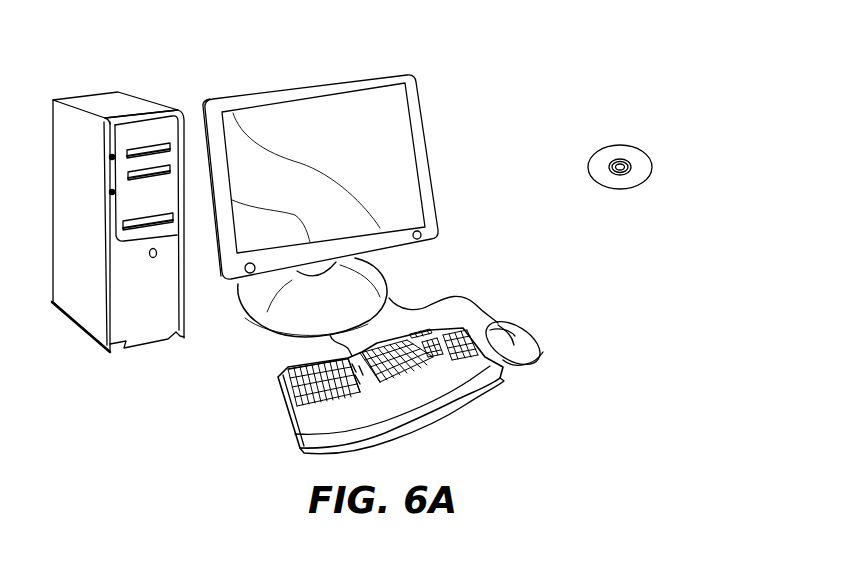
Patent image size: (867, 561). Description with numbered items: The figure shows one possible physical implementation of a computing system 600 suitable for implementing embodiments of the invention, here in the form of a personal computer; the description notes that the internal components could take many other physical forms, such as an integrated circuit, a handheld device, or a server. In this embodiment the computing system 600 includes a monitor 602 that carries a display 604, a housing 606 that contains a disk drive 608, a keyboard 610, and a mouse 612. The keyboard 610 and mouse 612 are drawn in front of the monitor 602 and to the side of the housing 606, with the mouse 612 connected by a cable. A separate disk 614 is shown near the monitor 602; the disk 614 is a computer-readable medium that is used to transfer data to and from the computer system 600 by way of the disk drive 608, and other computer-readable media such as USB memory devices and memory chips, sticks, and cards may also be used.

The computing system 600 is at (543, 58).
The monitor 602 is at (432, 173).
The display 604 is at (385, 113).
The housing 606 is at (105, 99).
The disk drive 608 is at (167, 222).
The keyboard 610 is at (290, 415).
The mouse 612 is at (537, 337).
The disk 614 is at (640, 143).